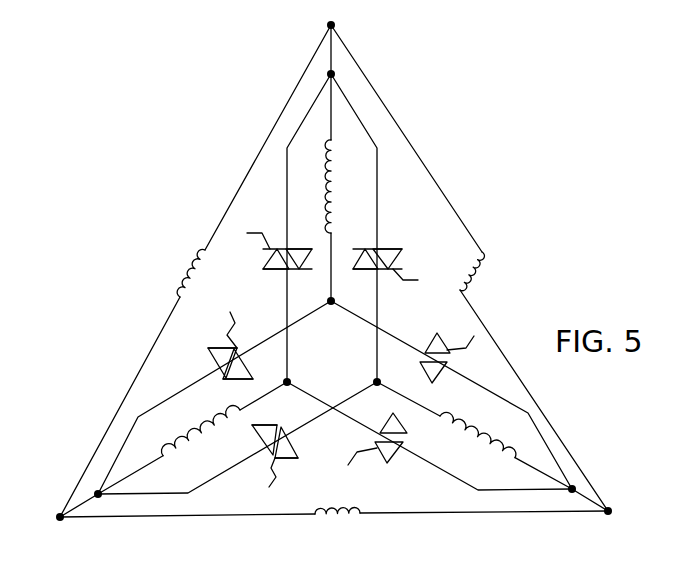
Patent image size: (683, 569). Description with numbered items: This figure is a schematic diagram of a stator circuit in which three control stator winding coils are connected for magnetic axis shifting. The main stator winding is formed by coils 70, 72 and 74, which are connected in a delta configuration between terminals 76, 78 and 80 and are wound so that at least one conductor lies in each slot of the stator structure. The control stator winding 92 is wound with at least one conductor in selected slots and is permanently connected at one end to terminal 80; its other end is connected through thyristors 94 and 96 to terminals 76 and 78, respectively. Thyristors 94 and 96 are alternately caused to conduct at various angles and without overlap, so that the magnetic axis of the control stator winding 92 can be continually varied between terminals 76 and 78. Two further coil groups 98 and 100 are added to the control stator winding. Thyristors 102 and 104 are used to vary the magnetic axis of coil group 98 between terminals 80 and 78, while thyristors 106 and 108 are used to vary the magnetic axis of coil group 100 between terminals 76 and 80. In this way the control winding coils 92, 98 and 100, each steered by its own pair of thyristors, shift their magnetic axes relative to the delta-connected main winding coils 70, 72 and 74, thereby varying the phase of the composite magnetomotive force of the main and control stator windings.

The main stator winding coil 70 is at (172, 276).
The main stator winding coil 72 is at (484, 270).
The main stator winding coil 74 is at (346, 516).
The terminal 76 is at (334, 22).
The terminal 78 is at (608, 514).
The terminal 80 is at (57, 519).
The control stator winding 92 is at (201, 440).
The thyristor 94 is at (263, 272).
The thyristor 96 is at (396, 462).
The coil group 98 is at (336, 183).
The coil group 100 is at (483, 444).
The thyristor 102 is at (210, 358).
The thyristor 104 is at (433, 336).
The thyristor 106 is at (390, 248).
The thyristor 108 is at (290, 460).